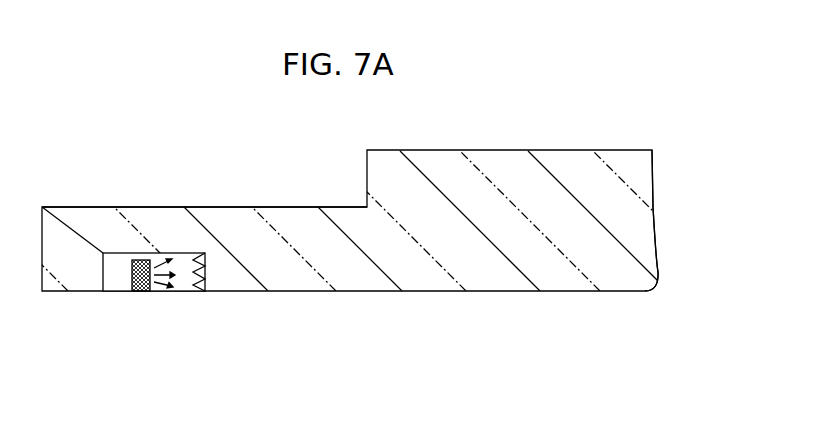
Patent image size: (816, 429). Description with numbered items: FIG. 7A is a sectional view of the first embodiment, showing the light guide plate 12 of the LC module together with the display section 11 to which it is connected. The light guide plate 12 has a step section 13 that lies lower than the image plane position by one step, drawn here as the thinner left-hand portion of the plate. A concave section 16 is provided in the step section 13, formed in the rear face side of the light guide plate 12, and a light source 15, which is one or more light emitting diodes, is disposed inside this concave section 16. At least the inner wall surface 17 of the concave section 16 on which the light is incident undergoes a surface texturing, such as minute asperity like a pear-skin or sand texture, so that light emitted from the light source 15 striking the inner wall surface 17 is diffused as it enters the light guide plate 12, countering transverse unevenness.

The display section 11 is at (497, 151).
The light guide plate 12 is at (635, 180).
The step section 13 is at (298, 207).
The light source 15 is at (131, 276).
The concave section 16 is at (142, 253).
The inner wall surface 17 is at (198, 253).